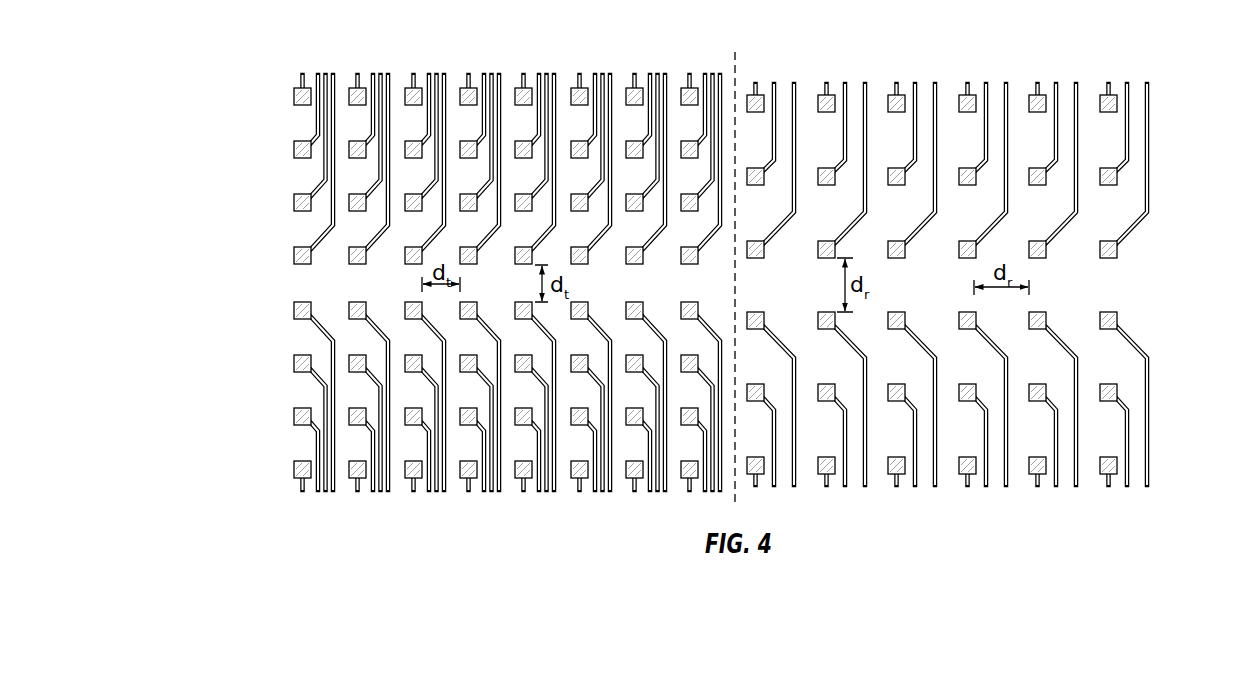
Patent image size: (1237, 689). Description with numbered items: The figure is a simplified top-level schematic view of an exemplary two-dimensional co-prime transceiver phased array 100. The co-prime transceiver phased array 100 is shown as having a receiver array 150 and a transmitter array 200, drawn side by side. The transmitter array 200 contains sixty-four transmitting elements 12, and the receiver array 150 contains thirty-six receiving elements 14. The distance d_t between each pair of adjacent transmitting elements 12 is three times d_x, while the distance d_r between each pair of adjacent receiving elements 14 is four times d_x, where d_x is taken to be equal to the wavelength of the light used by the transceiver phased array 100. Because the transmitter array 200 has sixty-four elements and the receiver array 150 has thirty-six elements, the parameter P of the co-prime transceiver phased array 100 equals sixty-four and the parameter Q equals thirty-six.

The transmitting element 12 is at (301, 480).
The receiving element 14 is at (827, 92).
The co-prime transceiver phased array 100 is at (763, 51).
The receiver array 150 is at (976, 285).
The transmitter array 200 is at (457, 304).